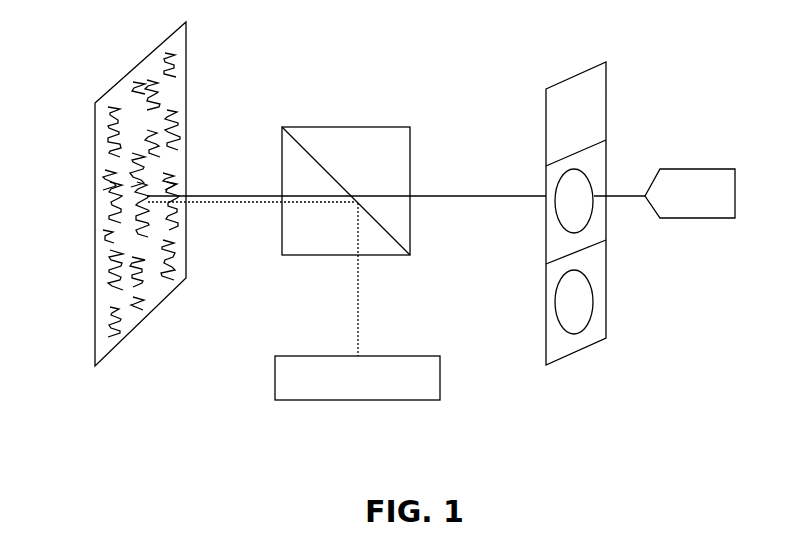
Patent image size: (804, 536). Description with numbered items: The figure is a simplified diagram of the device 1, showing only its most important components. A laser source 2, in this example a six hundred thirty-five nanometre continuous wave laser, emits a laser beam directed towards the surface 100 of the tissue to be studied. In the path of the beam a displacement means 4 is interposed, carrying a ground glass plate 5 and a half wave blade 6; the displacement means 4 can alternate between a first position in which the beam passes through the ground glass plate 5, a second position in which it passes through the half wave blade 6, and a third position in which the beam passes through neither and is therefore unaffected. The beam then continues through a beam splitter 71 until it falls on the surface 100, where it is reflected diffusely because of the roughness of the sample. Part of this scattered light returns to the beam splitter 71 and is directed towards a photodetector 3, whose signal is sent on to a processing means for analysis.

The device 1 is at (664, 57).
The laser source 2 is at (705, 180).
The photodetector 3 is at (320, 383).
The displacement means 4 is at (584, 338).
The ground glass plate 5 is at (572, 213).
The half wave blade 6 is at (570, 287).
The beam splitter 71 is at (316, 140).
The surface 100 is at (97, 340).